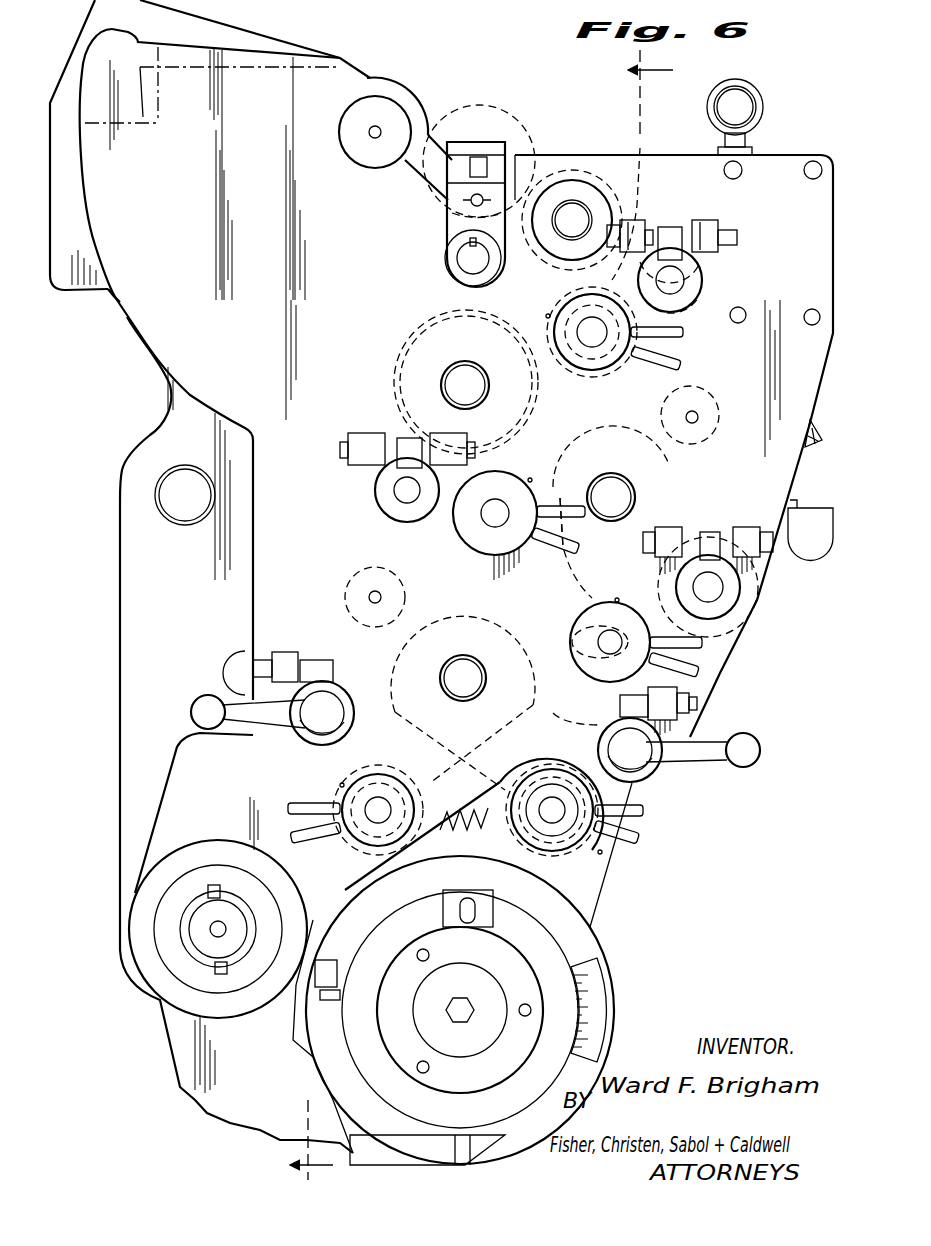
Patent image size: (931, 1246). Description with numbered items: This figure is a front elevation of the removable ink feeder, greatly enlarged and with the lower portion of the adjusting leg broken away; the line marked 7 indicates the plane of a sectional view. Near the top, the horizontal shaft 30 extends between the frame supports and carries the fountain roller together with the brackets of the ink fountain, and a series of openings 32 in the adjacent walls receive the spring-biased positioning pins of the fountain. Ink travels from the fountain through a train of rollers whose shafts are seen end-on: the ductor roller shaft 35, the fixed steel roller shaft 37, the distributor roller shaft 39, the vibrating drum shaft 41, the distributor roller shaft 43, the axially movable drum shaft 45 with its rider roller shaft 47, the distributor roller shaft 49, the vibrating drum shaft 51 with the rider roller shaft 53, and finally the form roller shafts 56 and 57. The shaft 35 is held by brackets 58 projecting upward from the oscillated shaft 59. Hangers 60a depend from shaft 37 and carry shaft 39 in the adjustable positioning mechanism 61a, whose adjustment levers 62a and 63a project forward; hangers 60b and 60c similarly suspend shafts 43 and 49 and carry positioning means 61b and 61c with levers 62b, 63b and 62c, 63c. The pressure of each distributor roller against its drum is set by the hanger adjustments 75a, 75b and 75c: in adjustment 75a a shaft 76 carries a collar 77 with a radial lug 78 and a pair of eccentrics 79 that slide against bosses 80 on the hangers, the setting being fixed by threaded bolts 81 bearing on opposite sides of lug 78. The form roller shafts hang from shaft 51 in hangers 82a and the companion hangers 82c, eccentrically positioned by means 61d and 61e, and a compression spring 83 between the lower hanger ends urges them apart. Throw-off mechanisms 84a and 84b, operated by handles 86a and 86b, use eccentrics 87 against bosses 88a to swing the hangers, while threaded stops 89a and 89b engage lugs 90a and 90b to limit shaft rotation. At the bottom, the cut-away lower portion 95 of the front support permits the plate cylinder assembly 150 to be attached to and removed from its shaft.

The section line 7- 7 is at (492, 615).
The horizontal shaft 30 is at (373, 140).
The openings 32 is at (122, 236).
The shaft 35 is at (470, 168).
The shaft 37 is at (573, 207).
The shaft 39 is at (592, 347).
The shaft 41 is at (464, 372).
The shaft 43 is at (495, 527).
The axially movable shaft 45 is at (636, 493).
The shaft 47 is at (688, 417).
The shaft 49 is at (605, 642).
The shaft 51 is at (470, 660).
The shaft 53 is at (356, 590).
The shaft 56 is at (560, 820).
The shaft 57 is at (372, 823).
The brackets 58 is at (457, 167).
The shaft 59 is at (460, 258).
The hangers 60a is at (642, 150).
The hangers 60b is at (515, 432).
The hangers 60c is at (668, 512).
The adjustable positioning mechanism 61a is at (545, 312).
The positioning means 61b is at (532, 478).
The positioning means 61c is at (624, 582).
The positioning means 61d is at (603, 853).
The positioning means 61e is at (340, 784).
The adjustment lever 62a is at (685, 334).
The adjustment lever 62b is at (561, 504).
The adjustment lever 62c is at (704, 642).
The adjustment lever 63a is at (682, 361).
The adjustment lever 63b is at (580, 545).
The adjustment lever 63c is at (700, 668).
The hanger adjustment means 75a is at (748, 236).
The hanger adjustment 75b is at (370, 480).
The hanger adjustment means 75c is at (752, 586).
The shaft 76 is at (703, 273).
The collar 77 is at (703, 282).
The lug 78 is at (676, 226).
The eccentrics 79 is at (707, 294).
The boss 80 is at (592, 324).
The threaded adjustment bolts 81 is at (715, 235).
The hangers 82a is at (553, 713).
The belt path 82c is at (455, 710).
The compression spring 83 is at (453, 1009).
The throw-off mechanism 84a is at (692, 770).
The throw-off mechanism 84b is at (270, 737).
The operating handle 86a is at (757, 740).
The operating handle 86b is at (200, 708).
The eccentrics 87 is at (697, 733).
The bosses 88a is at (608, 740).
The threaded stop 89a is at (698, 712).
The stop mechanism 89b is at (250, 655).
The lug 90a is at (633, 695).
The lug 90b is at (262, 652).
The lower portion of the front support 95 is at (293, 993).
The plate cylinder assembly 150 is at (620, 1010).